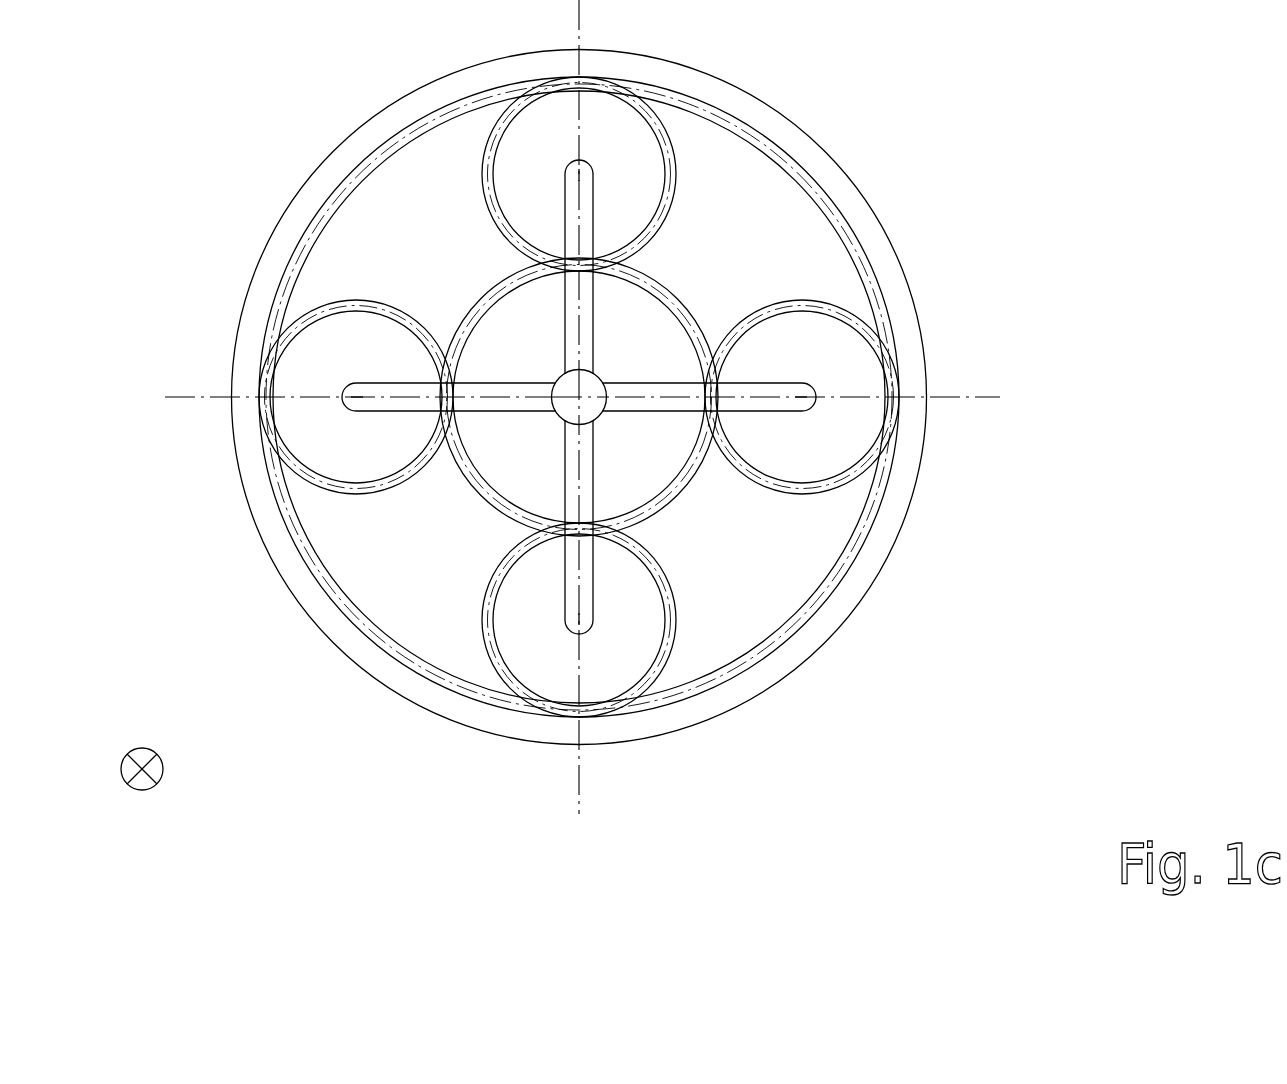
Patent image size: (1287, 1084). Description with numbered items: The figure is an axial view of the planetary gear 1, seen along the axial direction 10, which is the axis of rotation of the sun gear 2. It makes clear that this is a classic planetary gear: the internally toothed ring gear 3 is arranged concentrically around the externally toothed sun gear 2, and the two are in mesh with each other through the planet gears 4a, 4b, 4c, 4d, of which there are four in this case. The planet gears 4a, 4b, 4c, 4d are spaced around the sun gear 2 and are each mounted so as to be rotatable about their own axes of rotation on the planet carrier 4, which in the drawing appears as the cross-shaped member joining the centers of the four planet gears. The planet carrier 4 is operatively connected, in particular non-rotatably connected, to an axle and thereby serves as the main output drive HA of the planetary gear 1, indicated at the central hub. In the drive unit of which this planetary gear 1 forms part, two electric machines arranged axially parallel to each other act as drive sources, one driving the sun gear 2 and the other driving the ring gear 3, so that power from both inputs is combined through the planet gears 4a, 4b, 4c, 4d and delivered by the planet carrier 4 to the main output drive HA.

The planetary gear 1 is at (1020, 202).
The sun gear 2 is at (579, 397).
The ring gear 3 is at (397, 114).
The planet carrier 4 is at (593, 342).
The planet gear 4a is at (579, 174).
The planet gear 4b is at (802, 397).
The planet gear 4c is at (579, 620).
The planet gear 4d is at (356, 397).
The axial direction 10 is at (578, 398).
The main output drive HA is at (590, 405).